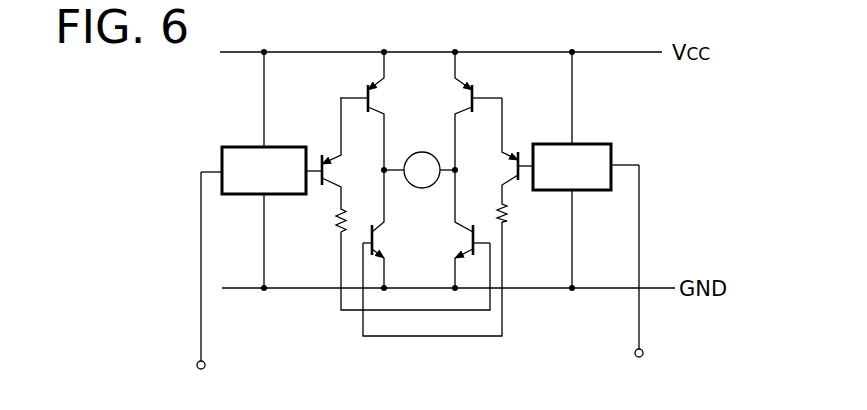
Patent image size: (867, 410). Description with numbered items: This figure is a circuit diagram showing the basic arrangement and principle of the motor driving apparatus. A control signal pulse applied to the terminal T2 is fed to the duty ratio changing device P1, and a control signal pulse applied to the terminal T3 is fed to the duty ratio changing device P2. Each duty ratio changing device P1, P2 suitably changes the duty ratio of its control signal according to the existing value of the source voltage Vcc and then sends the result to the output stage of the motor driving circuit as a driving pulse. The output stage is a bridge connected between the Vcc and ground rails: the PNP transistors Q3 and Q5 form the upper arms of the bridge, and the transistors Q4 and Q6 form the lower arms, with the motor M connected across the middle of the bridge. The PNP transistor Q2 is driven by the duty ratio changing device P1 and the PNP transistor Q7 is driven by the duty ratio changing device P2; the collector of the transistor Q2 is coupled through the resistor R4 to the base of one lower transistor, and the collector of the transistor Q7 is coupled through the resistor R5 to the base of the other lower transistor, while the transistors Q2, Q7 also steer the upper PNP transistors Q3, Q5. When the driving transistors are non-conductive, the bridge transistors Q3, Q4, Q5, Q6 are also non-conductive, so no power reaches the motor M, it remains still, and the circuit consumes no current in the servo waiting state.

The duty ratio changing device P1 is at (253, 170).
The duty ratio changing device P2 is at (586, 170).
The PNP transistor Q2 is at (339, 152).
The PNP transistor Q3 is at (377, 111).
The transistor Q4 is at (432, 253).
The PNP transistor Q5 is at (464, 111).
The transistor Q6 is at (415, 240).
The PNP transistor Q7 is at (503, 150).
The resistor R4 is at (325, 220).
The resistor R5 is at (518, 211).
The motor M is at (419, 170).
The terminal T2 is at (201, 286).
The terminal T3 is at (639, 275).